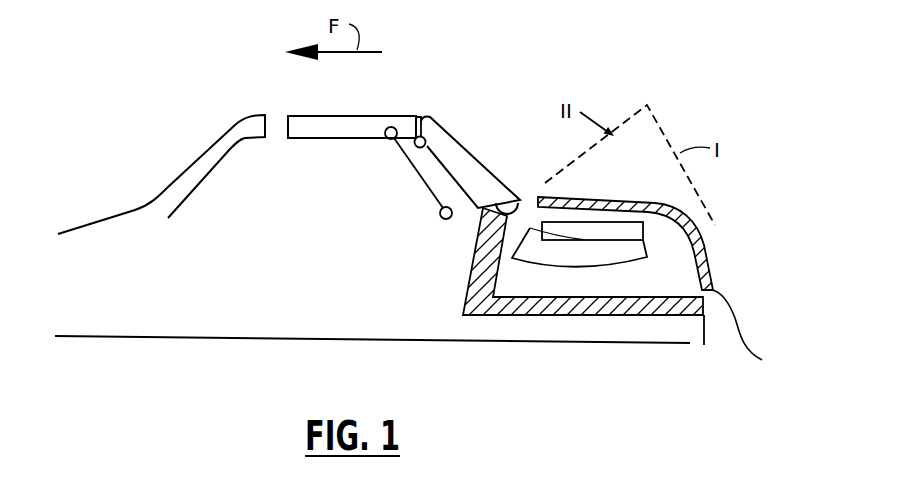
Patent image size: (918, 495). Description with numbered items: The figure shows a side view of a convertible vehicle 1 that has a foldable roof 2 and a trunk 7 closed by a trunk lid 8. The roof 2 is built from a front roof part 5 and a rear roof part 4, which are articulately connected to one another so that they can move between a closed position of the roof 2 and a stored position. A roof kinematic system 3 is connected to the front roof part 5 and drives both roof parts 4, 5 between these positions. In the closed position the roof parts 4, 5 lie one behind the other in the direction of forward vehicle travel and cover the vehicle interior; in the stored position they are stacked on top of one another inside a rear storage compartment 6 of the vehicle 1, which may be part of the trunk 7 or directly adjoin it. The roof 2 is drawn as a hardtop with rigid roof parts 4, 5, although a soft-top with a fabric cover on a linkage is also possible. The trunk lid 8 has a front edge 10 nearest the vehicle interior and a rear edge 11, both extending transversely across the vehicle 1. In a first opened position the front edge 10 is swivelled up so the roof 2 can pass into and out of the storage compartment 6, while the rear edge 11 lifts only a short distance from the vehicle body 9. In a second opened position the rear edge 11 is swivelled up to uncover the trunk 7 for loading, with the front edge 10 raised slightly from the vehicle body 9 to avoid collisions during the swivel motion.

The convertible vehicle 1 is at (500, 93).
The foldable roof 2 is at (384, 108).
The roof kinematic system 3 is at (421, 178).
The rear roof part 4 is at (473, 159).
The front roof part 5 is at (336, 136).
The rear storage compartment 6 is at (560, 291).
The trunk 7 is at (674, 261).
The trunk lid 8 is at (712, 268).
The vehicle body 9 is at (505, 333).
The front edge 10 is at (424, 117).
The rear edge 11 is at (680, 108).